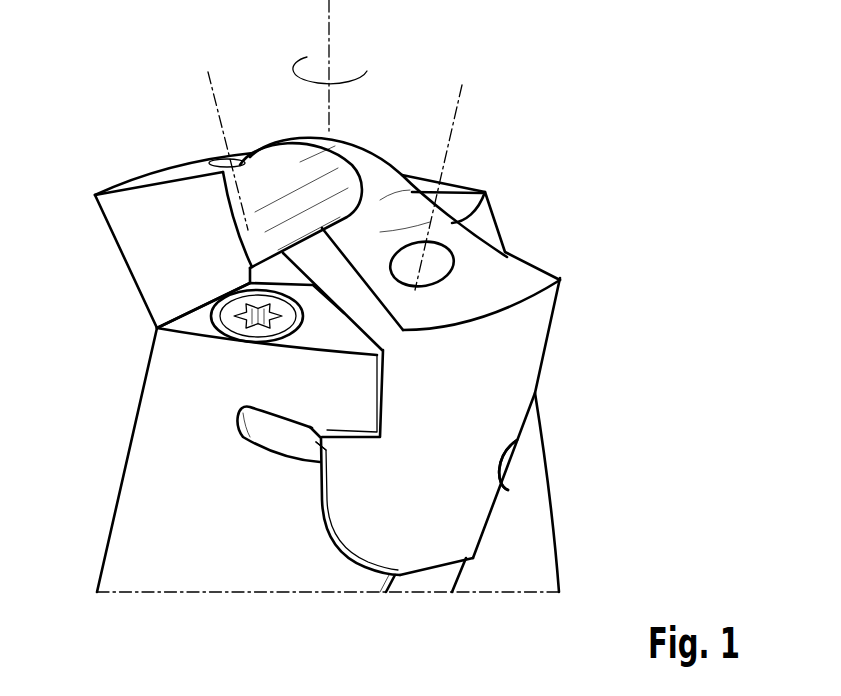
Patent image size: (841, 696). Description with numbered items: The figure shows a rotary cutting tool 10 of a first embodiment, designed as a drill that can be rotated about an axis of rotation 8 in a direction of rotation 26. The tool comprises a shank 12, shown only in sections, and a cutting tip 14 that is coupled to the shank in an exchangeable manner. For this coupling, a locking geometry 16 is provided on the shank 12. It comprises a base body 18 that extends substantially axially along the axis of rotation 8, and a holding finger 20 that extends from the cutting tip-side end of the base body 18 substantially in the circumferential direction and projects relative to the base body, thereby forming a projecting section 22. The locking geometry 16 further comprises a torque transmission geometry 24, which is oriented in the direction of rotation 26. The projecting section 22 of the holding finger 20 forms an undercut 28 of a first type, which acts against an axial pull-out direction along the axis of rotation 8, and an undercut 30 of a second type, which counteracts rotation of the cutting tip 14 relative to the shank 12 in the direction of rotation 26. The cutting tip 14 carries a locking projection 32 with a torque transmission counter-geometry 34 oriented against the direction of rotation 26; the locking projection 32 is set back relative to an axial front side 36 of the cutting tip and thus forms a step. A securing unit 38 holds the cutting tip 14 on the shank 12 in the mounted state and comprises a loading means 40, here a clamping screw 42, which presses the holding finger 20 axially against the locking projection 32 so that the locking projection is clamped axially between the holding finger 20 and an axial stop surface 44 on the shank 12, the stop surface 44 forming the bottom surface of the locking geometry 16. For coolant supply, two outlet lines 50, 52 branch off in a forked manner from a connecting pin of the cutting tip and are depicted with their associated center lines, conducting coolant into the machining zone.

The axis of rotation 8 is at (332, 12).
The rotary cutting tool 10 is at (380, 314).
The shank 12 is at (540, 543).
The cutting tip 14 is at (142, 200).
The locking geometry 16 is at (157, 483).
The base body 18 is at (147, 437).
The holding finger 20 is at (337, 390).
The projecting section 22 is at (363, 390).
The torque transmission geometry 24 is at (320, 522).
The direction of rotation 26 is at (349, 59).
The undercut of a first type 28 is at (334, 486).
The undercut of a second type 30 is at (569, 465).
The locking projection 32 is at (357, 548).
The torque transmission counter-geometry 34 is at (338, 517).
The axial front side 36 is at (520, 272).
The securing unit 38 is at (140, 298).
The loading means 40 is at (213, 294).
The clamping screw 42 is at (270, 302).
The axial stop surface 44 is at (443, 565).
The outlet line 50 is at (208, 83).
The outlet line 52 is at (462, 87).